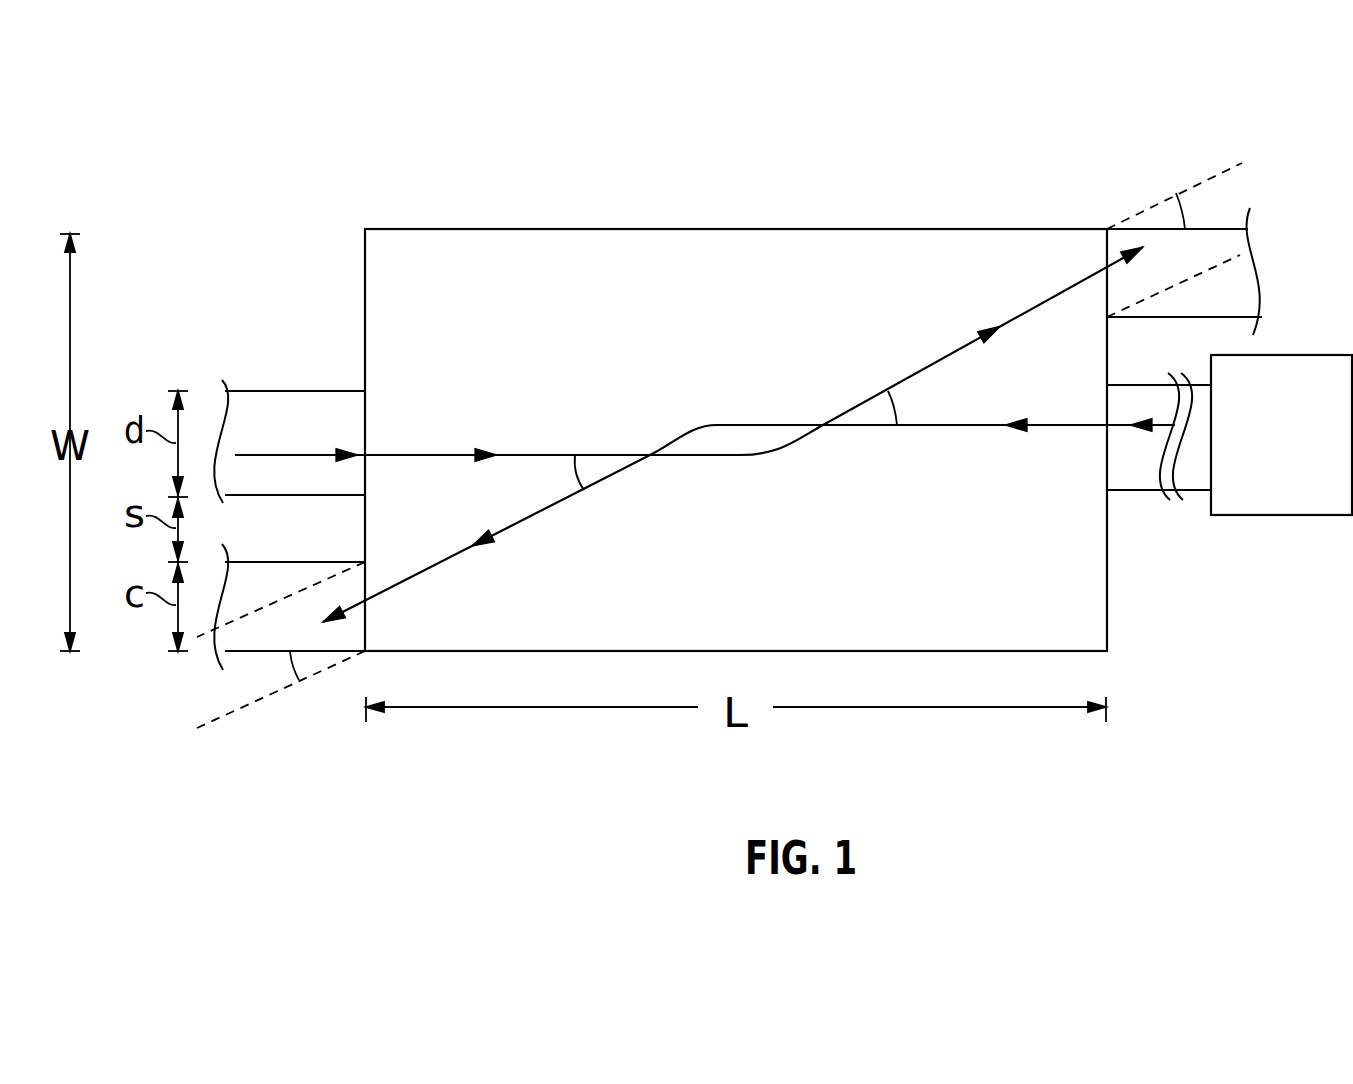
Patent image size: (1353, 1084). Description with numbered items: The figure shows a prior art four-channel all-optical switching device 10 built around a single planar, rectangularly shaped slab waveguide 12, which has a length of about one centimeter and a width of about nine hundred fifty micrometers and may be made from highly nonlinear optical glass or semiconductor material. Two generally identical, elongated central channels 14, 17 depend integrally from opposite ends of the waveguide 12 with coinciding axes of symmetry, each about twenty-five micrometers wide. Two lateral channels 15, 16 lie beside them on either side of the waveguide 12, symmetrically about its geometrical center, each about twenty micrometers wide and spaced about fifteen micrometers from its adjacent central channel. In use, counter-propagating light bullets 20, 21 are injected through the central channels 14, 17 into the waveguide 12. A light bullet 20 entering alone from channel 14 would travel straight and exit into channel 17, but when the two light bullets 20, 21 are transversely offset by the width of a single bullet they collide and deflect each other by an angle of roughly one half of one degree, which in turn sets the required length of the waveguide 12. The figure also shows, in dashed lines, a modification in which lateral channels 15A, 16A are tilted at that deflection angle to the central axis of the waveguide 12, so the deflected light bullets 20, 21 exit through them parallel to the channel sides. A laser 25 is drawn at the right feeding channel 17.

The four-channel all-optical switching device 10 is at (757, 214).
The slab waveguide 12 is at (510, 250).
The central channel 14 is at (280, 410).
The lateral channel 15 is at (285, 573).
The lateral channel 15A is at (260, 698).
The lateral channel 16 is at (1223, 229).
The lateral channel 16A is at (1153, 203).
The central channel 17 is at (1151, 390).
The light bullet 20 is at (508, 455).
The light bullet 21 is at (432, 568).
The laser 25 is at (1280, 500).